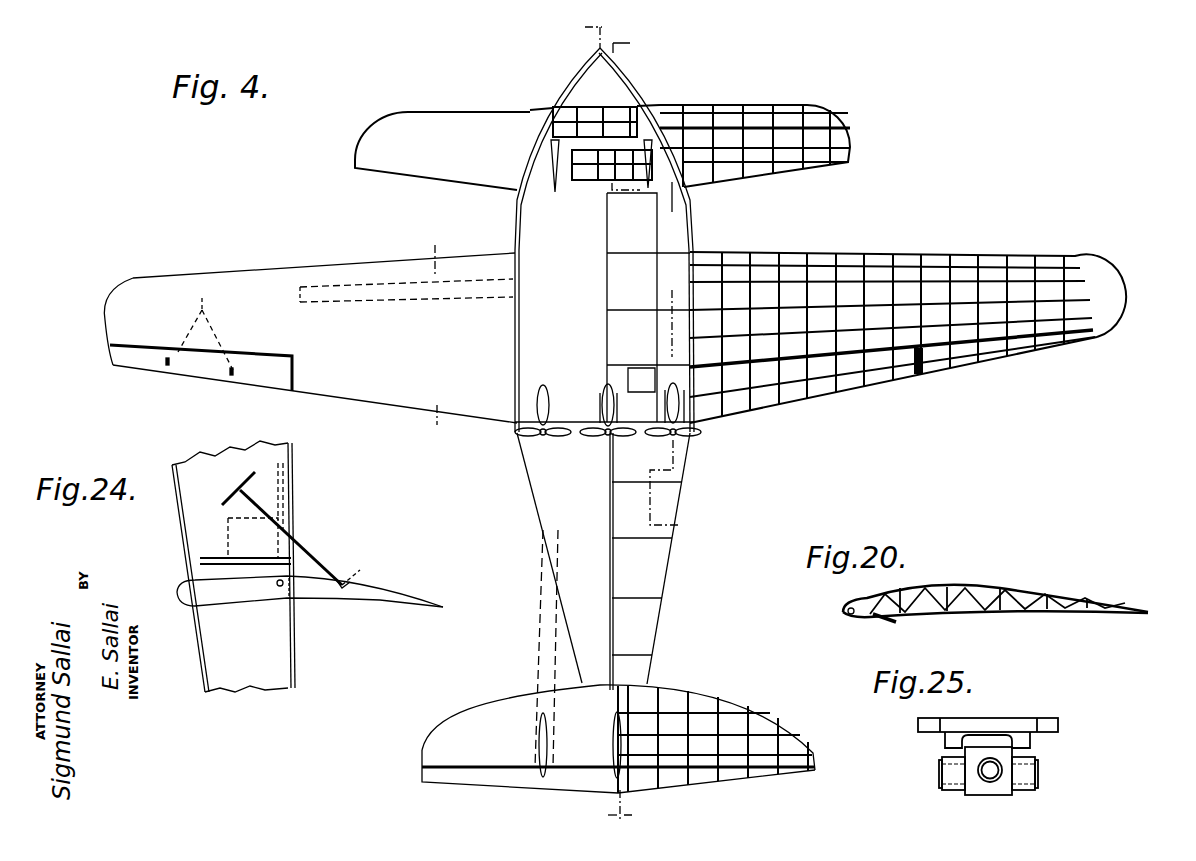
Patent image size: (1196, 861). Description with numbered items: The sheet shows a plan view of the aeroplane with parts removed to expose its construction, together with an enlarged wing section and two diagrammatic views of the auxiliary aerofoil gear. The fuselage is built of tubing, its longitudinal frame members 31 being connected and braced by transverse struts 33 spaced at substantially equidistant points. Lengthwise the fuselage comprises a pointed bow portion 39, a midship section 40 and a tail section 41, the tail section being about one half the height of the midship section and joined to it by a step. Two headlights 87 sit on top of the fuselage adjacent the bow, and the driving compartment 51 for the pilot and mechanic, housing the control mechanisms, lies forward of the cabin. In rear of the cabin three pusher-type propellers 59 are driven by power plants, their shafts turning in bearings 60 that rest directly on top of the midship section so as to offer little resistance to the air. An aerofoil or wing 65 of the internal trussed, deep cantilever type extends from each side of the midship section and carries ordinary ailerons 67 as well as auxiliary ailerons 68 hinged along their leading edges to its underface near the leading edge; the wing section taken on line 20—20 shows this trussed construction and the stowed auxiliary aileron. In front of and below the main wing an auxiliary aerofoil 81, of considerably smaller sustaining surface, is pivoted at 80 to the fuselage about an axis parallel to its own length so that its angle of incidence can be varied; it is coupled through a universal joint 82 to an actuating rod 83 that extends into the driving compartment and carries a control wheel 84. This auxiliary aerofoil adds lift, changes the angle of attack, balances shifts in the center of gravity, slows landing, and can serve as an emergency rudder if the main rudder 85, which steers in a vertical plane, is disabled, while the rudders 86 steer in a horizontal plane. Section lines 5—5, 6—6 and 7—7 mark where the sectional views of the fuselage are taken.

In FIG. 4, the section line 5— 5 is at (581, 426).
In FIG. 4, the section line 6— 6 is at (618, 420).
In FIG. 4, the section line 7— 7 is at (655, 278).
In FIG. 4, the section line 20— 20 is at (440, 341).
In FIG. 4, the longitudinal frame members 31 is at (655, 216).
In FIG. 4, the transverse struts 33 is at (632, 253).
In FIG. 4, the bow portion 39 is at (580, 78).
In FIG. 4, the midship section 40 is at (515, 345).
In FIG. 4, the tail section 41 is at (553, 525).
In FIG. 24, the driving compartment 51 is at (238, 458).
In FIG. 4, the propeller 59 is at (565, 440).
In FIG. 4, the bearings 60 is at (547, 398).
In FIG. 4, the aerofoil or wing 65 is at (277, 278).
In FIG. 20, the aerofoil or wing 65 is at (1033, 594).
In FIG. 4, the ailerons 67 is at (1013, 366).
In FIG. 4, the auxiliary ailerons 68 is at (362, 305).
In FIG. 20, the auxiliary ailerons 68 is at (888, 625).
In FIG. 24, the pivot 80 is at (278, 588).
In FIG. 4, the auxiliary aerofoil 81 is at (465, 118).
In FIG. 24, the auxiliary aerofoil 81 is at (398, 598).
In FIG. 24, the universal joint 82 is at (354, 570).
In FIG. 25, the universal joint 82 is at (958, 752).
In FIG. 24, the actuating rod 83 is at (298, 548).
In FIG. 24, the control wheel 84 is at (237, 486).
In FIG. 4, the main rudder 85 is at (498, 785).
In FIG. 4, the rudders 86 is at (538, 735).
In FIG. 4, the headlights 87 is at (553, 163).